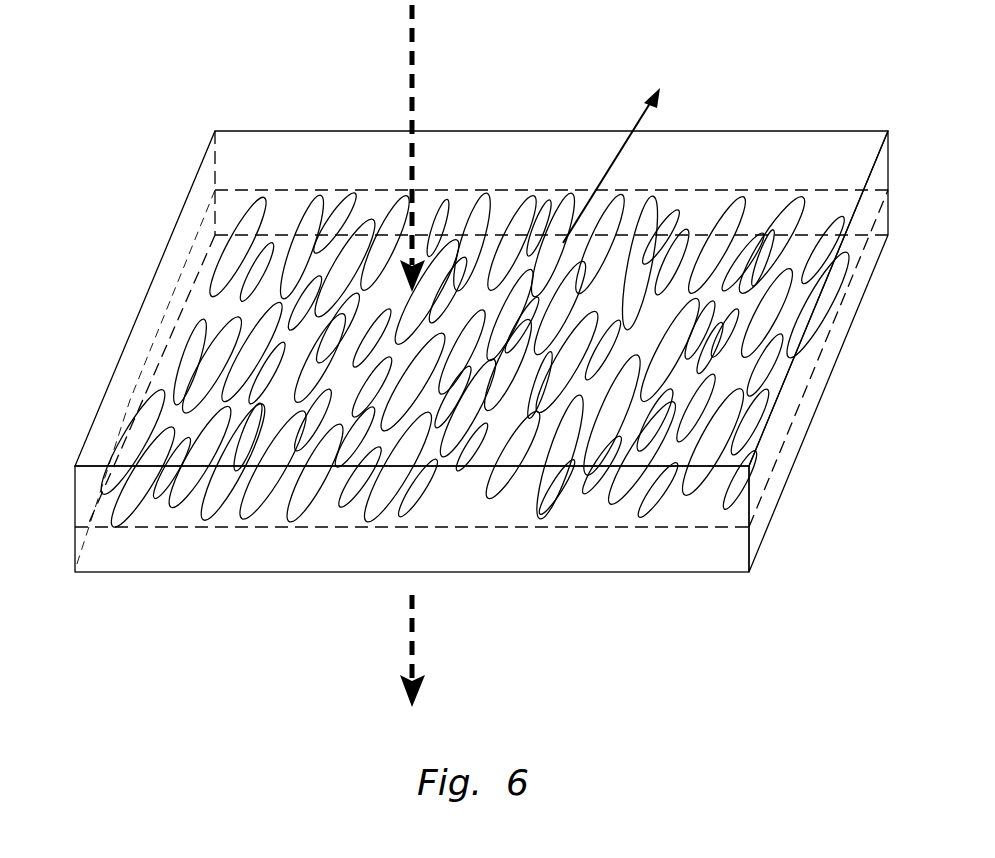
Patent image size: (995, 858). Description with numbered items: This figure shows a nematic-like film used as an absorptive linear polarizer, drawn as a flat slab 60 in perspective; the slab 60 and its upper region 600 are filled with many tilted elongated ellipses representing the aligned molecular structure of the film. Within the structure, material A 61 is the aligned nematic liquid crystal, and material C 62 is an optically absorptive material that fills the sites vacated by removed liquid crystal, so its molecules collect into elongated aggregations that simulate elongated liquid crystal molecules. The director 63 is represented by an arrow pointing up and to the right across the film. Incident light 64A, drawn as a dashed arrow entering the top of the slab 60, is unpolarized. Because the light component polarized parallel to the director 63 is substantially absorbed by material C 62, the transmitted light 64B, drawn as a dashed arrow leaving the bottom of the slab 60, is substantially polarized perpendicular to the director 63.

The substrate 60 is at (185, 257).
The scattering layer 600 is at (213, 131).
The material A 61 is at (248, 212).
The material C 62 is at (438, 223).
The director 63 is at (637, 160).
The incident light 64A is at (452, 148).
The transmitted light 64B is at (452, 651).